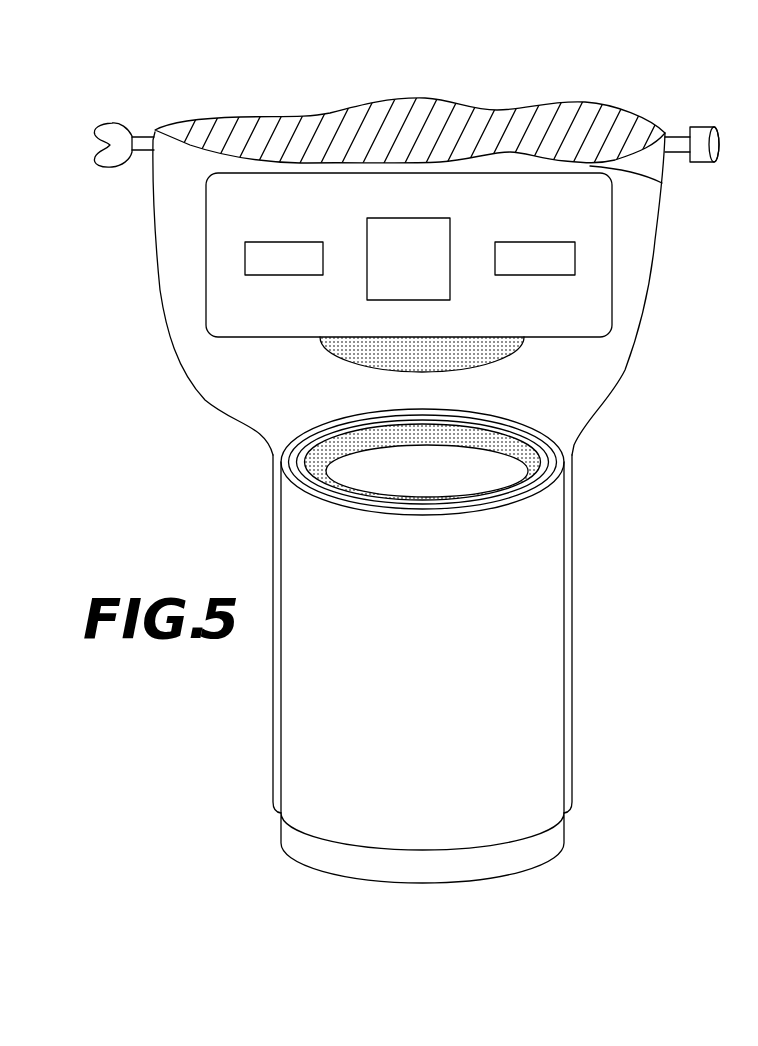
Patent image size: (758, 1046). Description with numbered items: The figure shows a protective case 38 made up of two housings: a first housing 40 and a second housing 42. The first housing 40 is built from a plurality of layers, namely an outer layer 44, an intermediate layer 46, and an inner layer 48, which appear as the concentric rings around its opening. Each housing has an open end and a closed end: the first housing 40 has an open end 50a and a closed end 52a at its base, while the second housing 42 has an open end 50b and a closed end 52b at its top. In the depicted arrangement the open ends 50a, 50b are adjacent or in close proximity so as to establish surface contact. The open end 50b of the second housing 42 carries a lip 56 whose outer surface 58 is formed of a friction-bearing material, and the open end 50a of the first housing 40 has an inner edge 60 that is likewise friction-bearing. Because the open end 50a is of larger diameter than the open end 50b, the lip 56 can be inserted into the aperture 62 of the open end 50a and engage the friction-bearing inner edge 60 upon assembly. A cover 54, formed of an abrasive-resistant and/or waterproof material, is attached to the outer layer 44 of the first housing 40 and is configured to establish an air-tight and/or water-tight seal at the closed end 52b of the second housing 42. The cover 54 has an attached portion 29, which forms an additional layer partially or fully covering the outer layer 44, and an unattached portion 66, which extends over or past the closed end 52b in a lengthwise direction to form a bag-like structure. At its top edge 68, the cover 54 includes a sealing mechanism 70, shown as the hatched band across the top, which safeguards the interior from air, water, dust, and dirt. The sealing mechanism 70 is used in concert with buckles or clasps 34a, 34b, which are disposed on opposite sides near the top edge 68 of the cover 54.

The protective case 38 is at (150, 58).
The top edge 68 is at (281, 117).
The sealing mechanism 70 is at (515, 128).
The buckle 34b is at (117, 122).
The buckle 34a is at (704, 127).
The cover 54 is at (173, 258).
The unattached portion 66 is at (660, 207).
The closed end 52b is at (660, 181).
The second housing 42 is at (652, 247).
The lip 56 is at (512, 362).
The outer surface 58 is at (465, 350).
The open end 50b is at (357, 360).
The outer layer 44 is at (558, 460).
The intermediate layer 46 is at (535, 445).
The open end 50a is at (357, 473).
The inner edge 60 is at (407, 437).
The inner layer 48 is at (468, 427).
The aperture 62 is at (447, 478).
The attached portion 29 is at (272, 678).
The first housing 40 is at (540, 667).
The closed end 52a is at (312, 867).